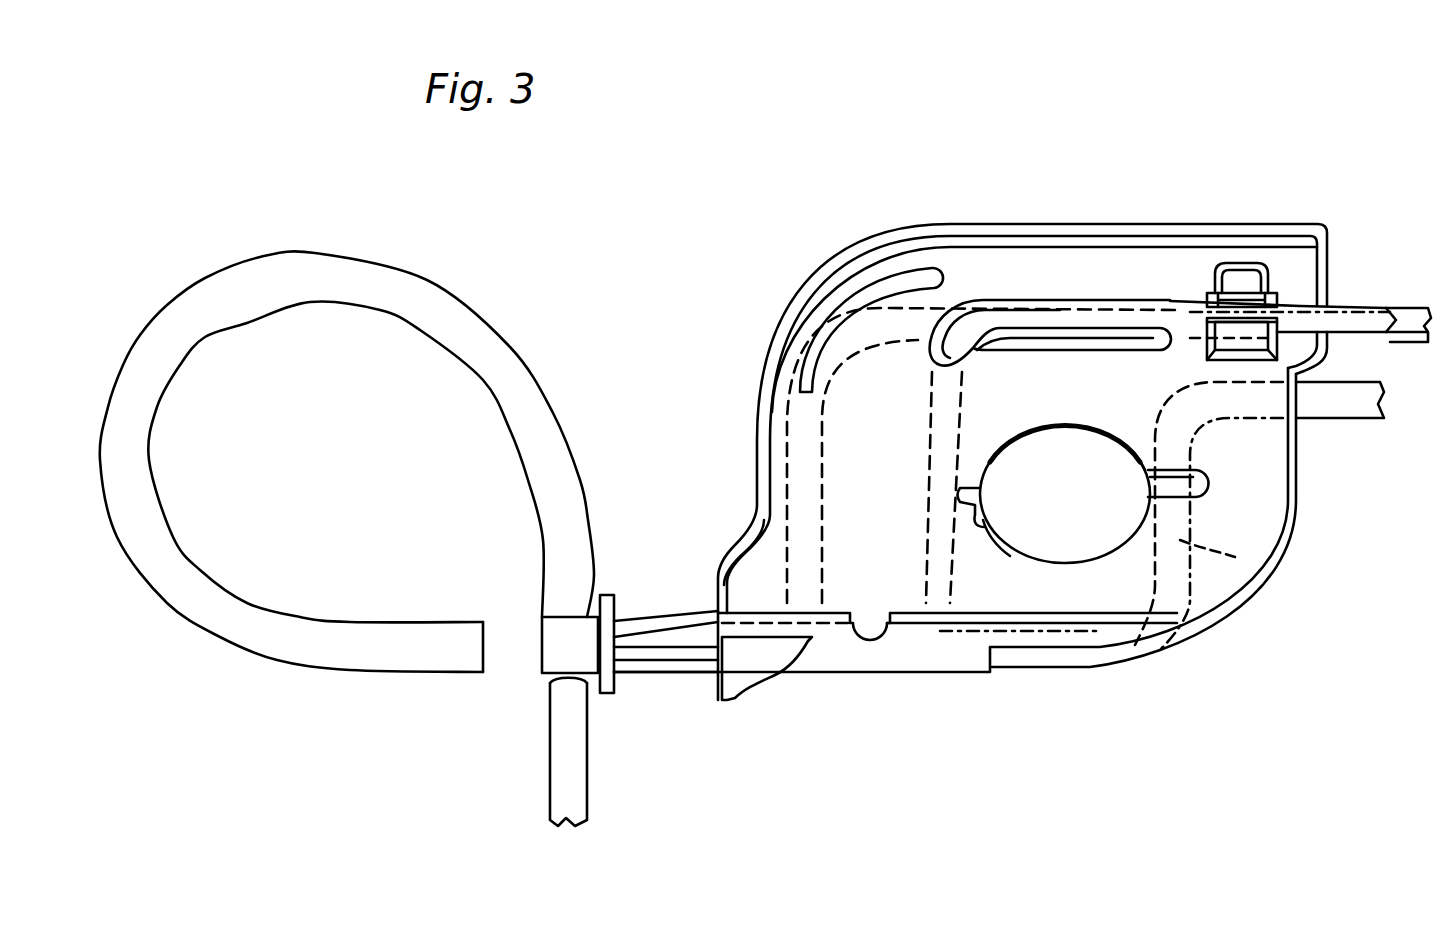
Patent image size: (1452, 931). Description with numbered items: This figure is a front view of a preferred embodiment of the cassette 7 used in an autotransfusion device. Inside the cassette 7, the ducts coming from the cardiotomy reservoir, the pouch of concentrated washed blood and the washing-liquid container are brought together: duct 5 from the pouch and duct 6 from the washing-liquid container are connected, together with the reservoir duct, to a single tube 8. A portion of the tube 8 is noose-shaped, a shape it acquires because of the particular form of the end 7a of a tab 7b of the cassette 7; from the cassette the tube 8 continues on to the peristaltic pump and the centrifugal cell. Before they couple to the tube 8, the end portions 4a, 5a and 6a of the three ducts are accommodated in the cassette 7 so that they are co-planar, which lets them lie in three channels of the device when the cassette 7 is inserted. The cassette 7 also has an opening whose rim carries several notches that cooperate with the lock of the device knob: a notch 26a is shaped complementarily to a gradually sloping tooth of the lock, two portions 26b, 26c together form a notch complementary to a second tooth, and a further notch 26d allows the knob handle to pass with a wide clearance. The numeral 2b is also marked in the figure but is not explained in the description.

The body member 2b is at (1085, 523).
The end portion of duct 4a is at (1253, 563).
The duct 5 is at (1352, 305).
The end portion of duct 5a is at (922, 446).
The duct 6 is at (1410, 305).
The end portion of duct 6a is at (1093, 318).
The cassette 7 is at (816, 278).
The end of tab 7a is at (560, 652).
The tab 7b is at (655, 661).
The tube 8 is at (497, 352).
The notch 26a is at (1117, 443).
The notch portion 26b is at (993, 543).
The notch portion 26c is at (985, 432).
The notch 26d is at (1203, 485).